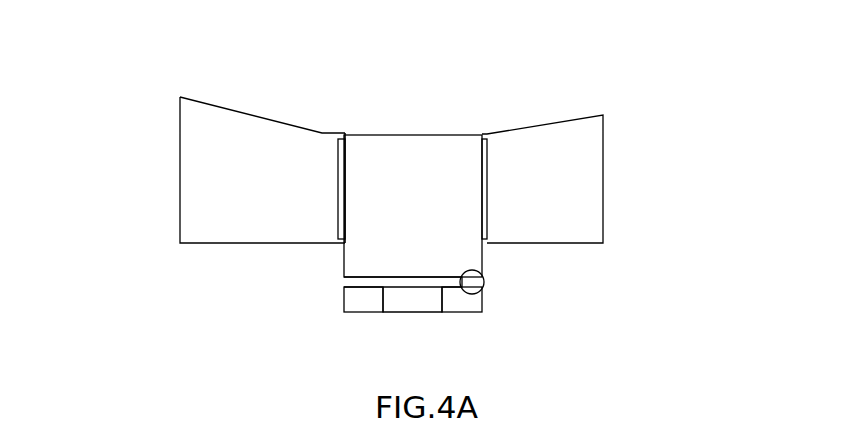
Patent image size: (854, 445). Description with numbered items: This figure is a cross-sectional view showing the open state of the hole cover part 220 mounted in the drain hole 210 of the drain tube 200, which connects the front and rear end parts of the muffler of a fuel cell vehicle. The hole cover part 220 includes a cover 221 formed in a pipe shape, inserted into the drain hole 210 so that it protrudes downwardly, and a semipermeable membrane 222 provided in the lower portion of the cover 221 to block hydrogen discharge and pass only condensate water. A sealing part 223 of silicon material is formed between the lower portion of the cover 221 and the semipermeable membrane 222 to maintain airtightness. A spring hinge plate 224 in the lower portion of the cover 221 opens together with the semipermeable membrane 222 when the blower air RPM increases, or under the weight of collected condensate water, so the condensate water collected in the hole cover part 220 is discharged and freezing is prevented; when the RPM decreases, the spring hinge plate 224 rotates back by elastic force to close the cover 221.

The drain tube 200 is at (382, 195).
The drain hole 210 is at (486, 156).
The hole cover part 220 is at (101, 238).
The cover 221 is at (363, 203).
The semipermeable membrane 222 is at (415, 303).
The sealing part 223 is at (408, 283).
The spring hinge plate 224 is at (462, 303).